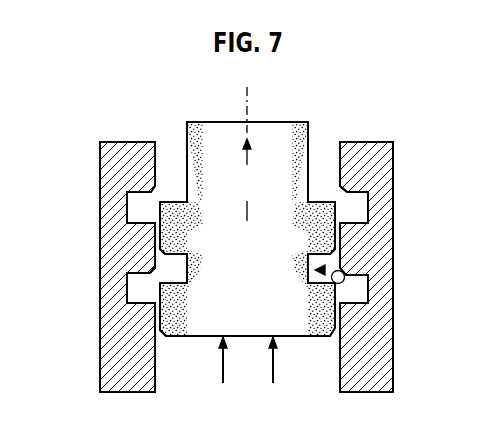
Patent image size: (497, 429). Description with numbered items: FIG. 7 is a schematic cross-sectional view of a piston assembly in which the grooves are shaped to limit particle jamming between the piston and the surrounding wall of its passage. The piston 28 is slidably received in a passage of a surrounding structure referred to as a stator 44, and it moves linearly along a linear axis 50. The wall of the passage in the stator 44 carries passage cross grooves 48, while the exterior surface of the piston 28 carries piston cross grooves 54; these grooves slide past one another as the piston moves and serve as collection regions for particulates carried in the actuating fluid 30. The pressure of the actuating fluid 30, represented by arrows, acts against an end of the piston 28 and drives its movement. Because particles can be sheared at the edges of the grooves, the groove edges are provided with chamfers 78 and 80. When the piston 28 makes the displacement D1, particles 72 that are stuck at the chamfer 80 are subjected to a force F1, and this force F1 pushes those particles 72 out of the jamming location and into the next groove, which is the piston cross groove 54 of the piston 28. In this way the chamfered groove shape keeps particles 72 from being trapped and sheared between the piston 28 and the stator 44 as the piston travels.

The piston 28 is at (258, 291).
The actuating fluid 30 is at (273, 366).
The stator 44 is at (380, 359).
The passage cross grooves 48 is at (125, 208).
The linear axis 50 is at (250, 110).
The piston cross grooves 54 is at (188, 267).
The particles 72 is at (342, 282).
The chamfer 78 is at (160, 328).
The chamfer 80 is at (150, 271).
The displacement D1 is at (247, 180).
The force F1 is at (323, 270).